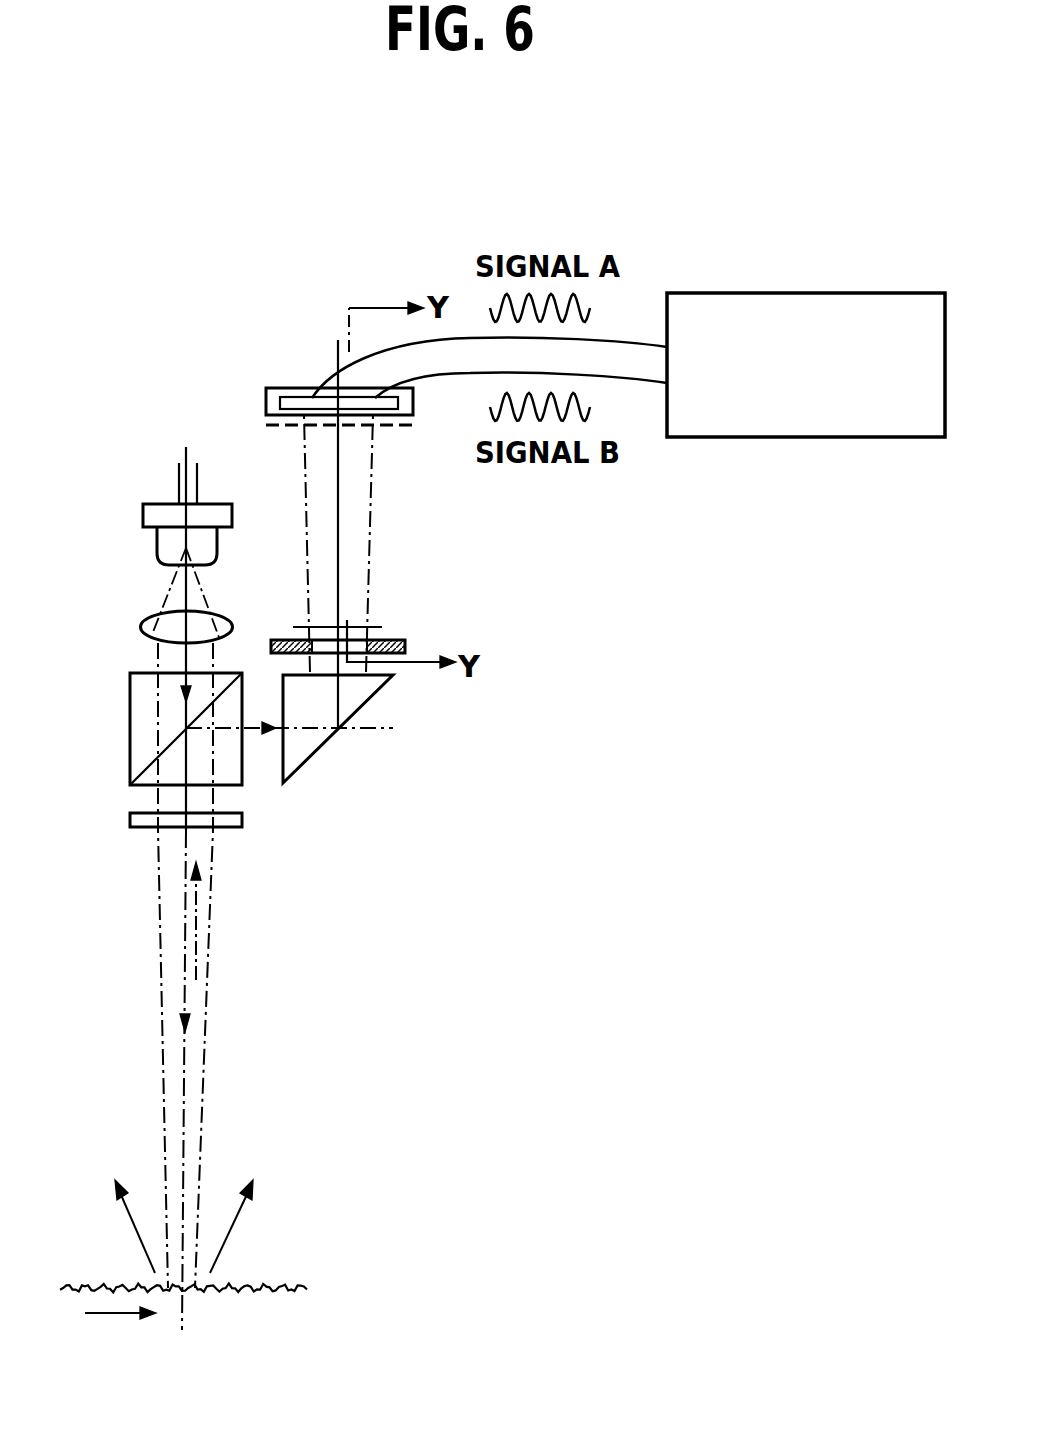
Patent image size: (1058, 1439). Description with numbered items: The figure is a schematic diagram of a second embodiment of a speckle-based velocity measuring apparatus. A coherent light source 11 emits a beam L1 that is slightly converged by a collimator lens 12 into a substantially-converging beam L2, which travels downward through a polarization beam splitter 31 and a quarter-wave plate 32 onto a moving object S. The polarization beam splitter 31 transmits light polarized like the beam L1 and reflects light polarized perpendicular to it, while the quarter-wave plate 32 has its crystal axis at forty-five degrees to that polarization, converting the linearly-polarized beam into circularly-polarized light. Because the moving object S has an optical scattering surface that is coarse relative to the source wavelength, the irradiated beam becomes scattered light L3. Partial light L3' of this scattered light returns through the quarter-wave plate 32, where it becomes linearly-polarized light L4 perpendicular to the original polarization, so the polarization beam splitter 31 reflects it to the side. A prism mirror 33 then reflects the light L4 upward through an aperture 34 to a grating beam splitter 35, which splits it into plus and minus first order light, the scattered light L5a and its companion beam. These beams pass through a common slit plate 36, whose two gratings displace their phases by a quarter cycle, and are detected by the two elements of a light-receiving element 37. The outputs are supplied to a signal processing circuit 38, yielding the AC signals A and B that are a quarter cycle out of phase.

The coherent light source 11 is at (155, 503).
The collimator lens 12 is at (141, 627).
The polarization beam splitter 31 is at (130, 729).
The λ/4 wave plate 32 is at (130, 820).
The prism mirror 33 is at (313, 744).
The aperture 34 is at (402, 640).
The grating beam splitter 35 is at (300, 626).
The slit plate 36 is at (271, 430).
The light-receiving element 37 is at (276, 388).
The signal processing circuit 38 is at (818, 437).
The beam L1 is at (163, 593).
The beam L2 is at (156, 660).
The scattered light L3 is at (172, 1204).
The partial light L3' is at (243, 922).
The linearly-polarized light L4 is at (187, 803).
The scattered light L5a is at (373, 514).
The moving object S is at (262, 1288).